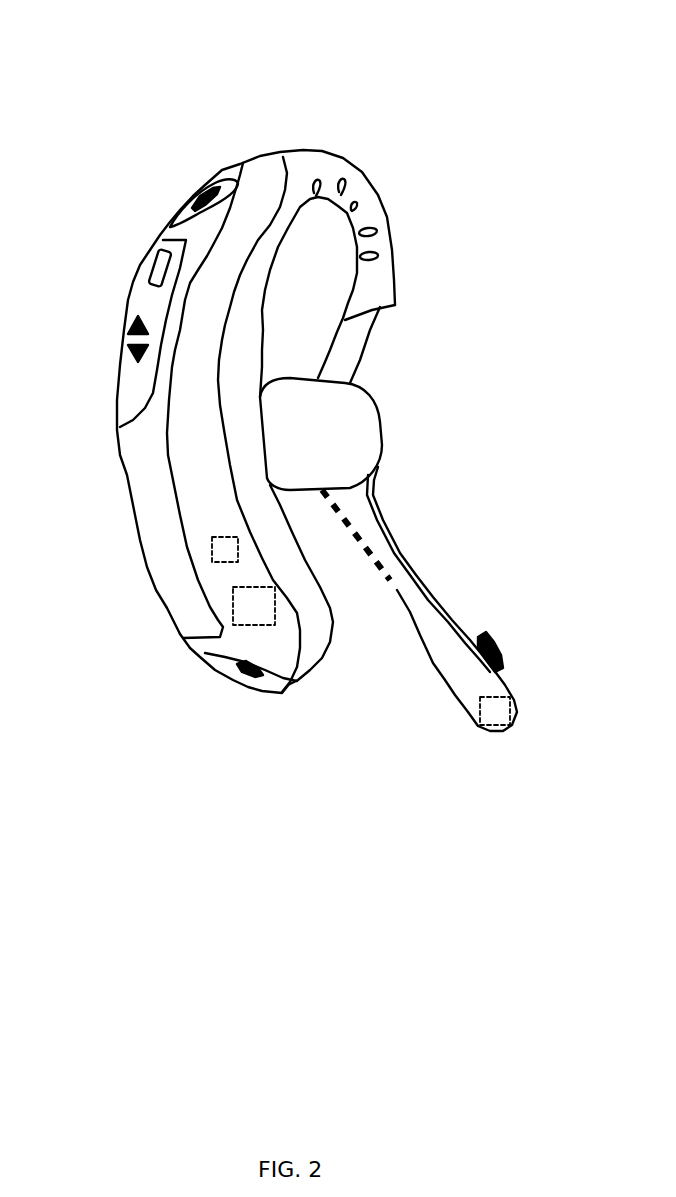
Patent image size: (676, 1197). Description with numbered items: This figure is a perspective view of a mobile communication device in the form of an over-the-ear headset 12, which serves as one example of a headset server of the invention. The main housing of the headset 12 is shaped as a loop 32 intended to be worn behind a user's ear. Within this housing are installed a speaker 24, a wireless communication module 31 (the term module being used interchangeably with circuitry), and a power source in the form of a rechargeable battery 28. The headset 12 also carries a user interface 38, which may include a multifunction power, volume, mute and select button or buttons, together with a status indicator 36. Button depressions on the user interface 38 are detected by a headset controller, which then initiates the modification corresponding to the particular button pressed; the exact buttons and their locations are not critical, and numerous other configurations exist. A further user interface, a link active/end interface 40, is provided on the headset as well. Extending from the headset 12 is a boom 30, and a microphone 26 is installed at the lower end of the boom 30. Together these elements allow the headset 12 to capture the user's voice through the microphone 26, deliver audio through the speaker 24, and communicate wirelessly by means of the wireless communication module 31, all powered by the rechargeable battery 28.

The headset 12 is at (285, 108).
The speaker 24 is at (321, 434).
The microphone 26 is at (495, 711).
The rechargeable battery 28 is at (254, 606).
The boom 30 is at (415, 567).
The wireless communication module 31 is at (225, 549).
The loop 32 is at (142, 467).
The status indicator 36 is at (157, 263).
The user interface 38 is at (203, 193).
The link active/end interface 40 is at (493, 643).